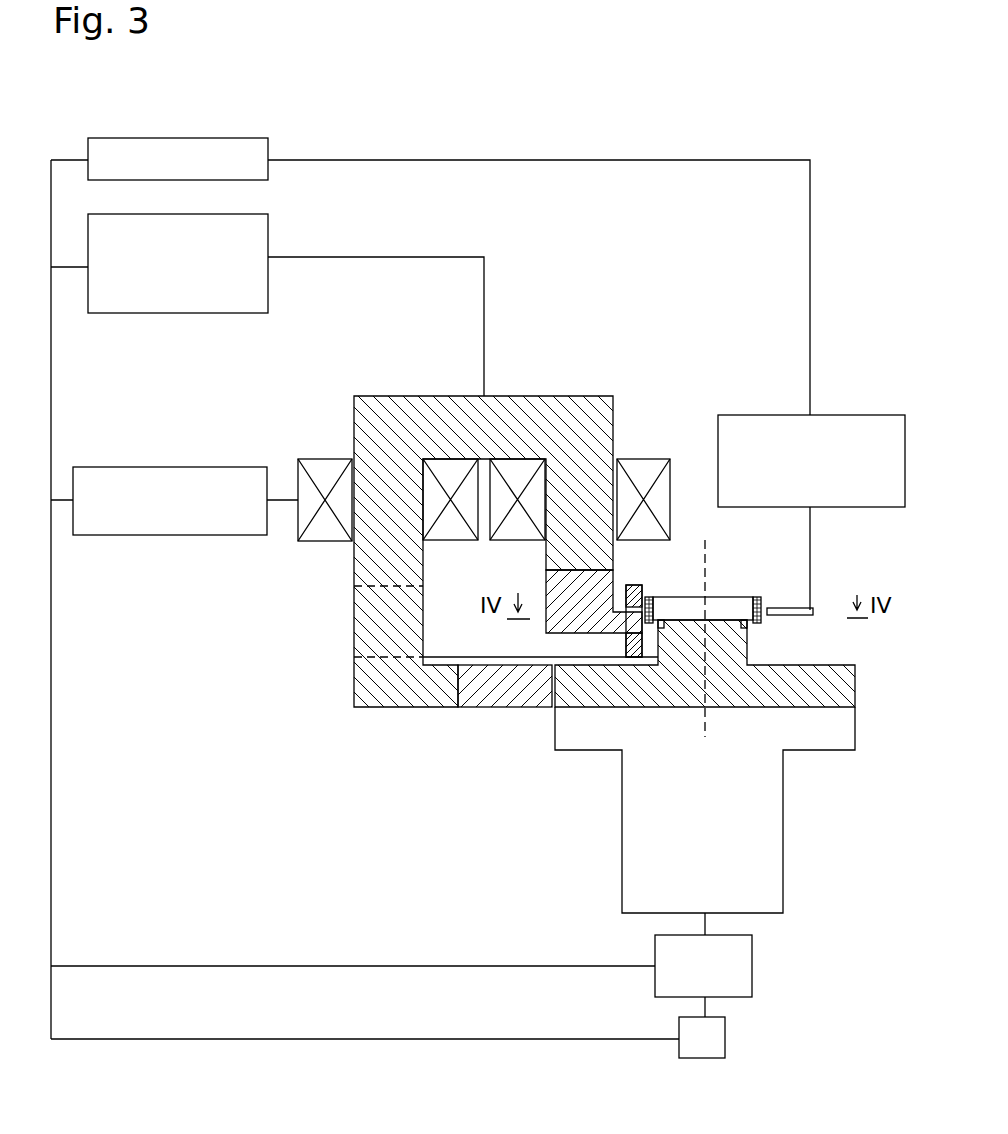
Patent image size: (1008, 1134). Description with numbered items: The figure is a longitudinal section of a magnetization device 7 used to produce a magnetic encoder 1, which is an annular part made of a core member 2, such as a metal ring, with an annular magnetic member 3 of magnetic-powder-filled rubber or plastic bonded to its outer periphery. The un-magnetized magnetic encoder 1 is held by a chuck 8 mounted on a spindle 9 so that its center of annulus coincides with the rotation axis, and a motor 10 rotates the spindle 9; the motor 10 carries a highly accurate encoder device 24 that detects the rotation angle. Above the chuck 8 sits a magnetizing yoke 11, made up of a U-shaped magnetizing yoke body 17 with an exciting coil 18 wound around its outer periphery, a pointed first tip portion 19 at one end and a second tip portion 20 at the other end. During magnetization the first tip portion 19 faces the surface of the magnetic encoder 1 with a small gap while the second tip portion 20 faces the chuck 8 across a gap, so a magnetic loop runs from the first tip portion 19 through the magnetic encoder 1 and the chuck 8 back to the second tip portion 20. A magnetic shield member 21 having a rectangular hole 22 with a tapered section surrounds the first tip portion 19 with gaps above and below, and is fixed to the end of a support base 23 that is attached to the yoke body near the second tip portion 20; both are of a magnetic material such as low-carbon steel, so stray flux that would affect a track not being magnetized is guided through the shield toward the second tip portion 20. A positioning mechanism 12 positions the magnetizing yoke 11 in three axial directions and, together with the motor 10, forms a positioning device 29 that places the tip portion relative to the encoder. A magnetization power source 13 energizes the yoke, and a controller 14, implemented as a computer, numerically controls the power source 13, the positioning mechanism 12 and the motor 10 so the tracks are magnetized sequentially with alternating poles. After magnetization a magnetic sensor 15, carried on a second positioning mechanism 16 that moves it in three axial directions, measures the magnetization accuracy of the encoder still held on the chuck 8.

The magnetic encoder 1 is at (723, 600).
The core member 2 is at (753, 598).
The annular magnetic member 3 is at (758, 598).
The magnetization device 7 is at (66, 125).
The chuck 8 is at (823, 673).
The spindle 9 is at (775, 806).
The motor 10 is at (752, 965).
The magnetizing yoke 11 is at (483, 577).
The positioning mechanism 12 is at (175, 313).
The magnetization power source 13 is at (185, 535).
The controller 14 is at (232, 180).
The magnetic sensor 15 is at (790, 615).
The positioning mechanism 16 is at (848, 425).
The magnetizing yoke body 17 is at (353, 620).
The exciting coil 18 is at (310, 537).
The first tip portion 19 is at (617, 622).
The second tip portion 20 is at (503, 707).
The magnetic shield member 21 is at (643, 590).
The rectangular hole 22 is at (620, 597).
The support base 23 is at (468, 592).
The encoder device 24 is at (725, 1040).
The positioning device 29 is at (72, 306).